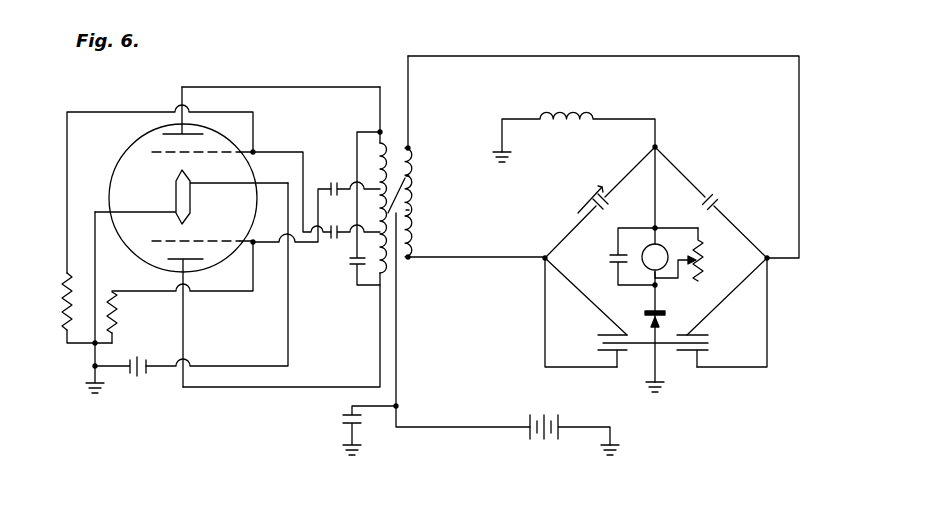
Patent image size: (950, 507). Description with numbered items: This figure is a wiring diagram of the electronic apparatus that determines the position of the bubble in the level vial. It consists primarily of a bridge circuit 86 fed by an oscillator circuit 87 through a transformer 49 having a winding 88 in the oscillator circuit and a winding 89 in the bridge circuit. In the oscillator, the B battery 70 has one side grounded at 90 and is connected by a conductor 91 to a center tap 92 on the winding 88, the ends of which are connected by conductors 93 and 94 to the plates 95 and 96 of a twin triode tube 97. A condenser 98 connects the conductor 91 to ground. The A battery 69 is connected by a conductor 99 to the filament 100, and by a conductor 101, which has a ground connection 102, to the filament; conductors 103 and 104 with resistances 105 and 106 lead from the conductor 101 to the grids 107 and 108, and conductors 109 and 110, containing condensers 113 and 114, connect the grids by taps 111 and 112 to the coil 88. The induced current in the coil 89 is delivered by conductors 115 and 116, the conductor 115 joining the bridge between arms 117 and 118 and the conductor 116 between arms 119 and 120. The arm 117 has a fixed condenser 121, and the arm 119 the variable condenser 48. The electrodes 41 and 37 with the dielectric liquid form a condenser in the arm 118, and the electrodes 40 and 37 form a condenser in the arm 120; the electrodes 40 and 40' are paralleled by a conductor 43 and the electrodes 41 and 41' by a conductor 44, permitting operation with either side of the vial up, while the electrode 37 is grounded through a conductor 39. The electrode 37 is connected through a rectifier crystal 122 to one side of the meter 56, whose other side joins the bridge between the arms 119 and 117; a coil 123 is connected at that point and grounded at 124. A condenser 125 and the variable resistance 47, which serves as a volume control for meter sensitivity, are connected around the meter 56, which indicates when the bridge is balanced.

The conductor 93 is at (284, 87).
The oscillator circuit 87 is at (380, 87).
The plate 95 is at (163, 135).
The twin triode tube 97 is at (110, 184).
The grid 107 is at (193, 153).
The filament 100 is at (174, 198).
The grid 108 is at (210, 241).
The conductor 109 is at (286, 142).
The winding 88 is at (380, 162).
The tap 111 is at (332, 184).
The condenser 113 is at (332, 195).
The condenser 114 is at (333, 239).
The tap 112 is at (351, 259).
The winding 89 is at (409, 160).
The center tap 92 is at (409, 178).
The transformer 49 is at (409, 210).
The conductor 115 is at (408, 117).
The conductor 116 is at (466, 257).
The coil 123 is at (593, 110).
The ground 124 is at (510, 163).
The arm 119 is at (610, 187).
The variable condenser 48 is at (593, 203).
The bridge circuit 86 is at (710, 175).
The condenser 121 is at (717, 188).
The arm 117 is at (750, 214).
The meter 56 is at (657, 255).
The condenser 125 is at (617, 258).
The variable resistance 47 is at (712, 262).
The arm 120 is at (585, 285).
The rectifier crystal 122 is at (645, 313).
The arm 118 is at (722, 292).
The conductor 43 is at (545, 332).
The electrode 40 is at (600, 325).
The electrode 40' is at (597, 356).
The conductor 39 is at (657, 338).
The electrode 41 is at (710, 326).
The electrode 41' is at (710, 354).
The conductor 44 is at (767, 347).
The electrode 37 is at (633, 345).
The conductor 101 is at (97, 273).
The plate 96 is at (168, 259).
The resistance 105 is at (65, 308).
The resistance 106 is at (115, 317).
The conductor 104 is at (112, 347).
The conductor 103 is at (67, 342).
The ground connection 102 is at (88, 382).
The A battery 69 is at (130, 374).
The conductor 110 is at (256, 244).
The conductor 99 is at (290, 352).
The conductor 94 is at (295, 387).
The conductor 91 is at (397, 378).
The condenser 98 is at (347, 420).
The B battery 70 is at (537, 438).
The ground 90 is at (612, 460).